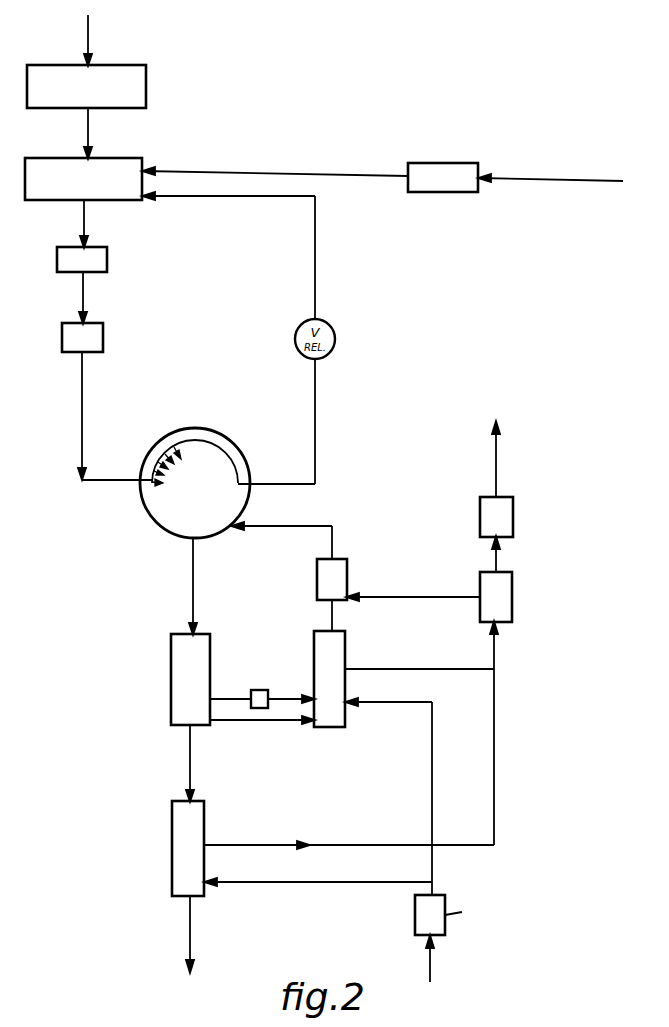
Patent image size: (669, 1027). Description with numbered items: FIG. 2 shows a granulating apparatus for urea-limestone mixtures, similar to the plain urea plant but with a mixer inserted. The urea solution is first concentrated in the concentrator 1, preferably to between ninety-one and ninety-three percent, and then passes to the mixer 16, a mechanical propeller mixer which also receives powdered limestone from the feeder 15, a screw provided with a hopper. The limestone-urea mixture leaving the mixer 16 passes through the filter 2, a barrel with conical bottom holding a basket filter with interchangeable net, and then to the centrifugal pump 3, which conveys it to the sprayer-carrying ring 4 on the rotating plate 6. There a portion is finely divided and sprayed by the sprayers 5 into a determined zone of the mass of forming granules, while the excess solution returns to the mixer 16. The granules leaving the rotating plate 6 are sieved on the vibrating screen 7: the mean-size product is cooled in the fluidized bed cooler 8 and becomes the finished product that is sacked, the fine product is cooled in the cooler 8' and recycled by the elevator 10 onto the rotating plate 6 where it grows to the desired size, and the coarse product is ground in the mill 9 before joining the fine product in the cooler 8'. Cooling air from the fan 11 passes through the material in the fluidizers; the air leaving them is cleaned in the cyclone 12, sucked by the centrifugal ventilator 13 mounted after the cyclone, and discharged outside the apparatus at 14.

The concentrator 1 is at (147, 74).
The mixer 16 is at (128, 160).
The filter 2 is at (108, 259).
The centrifugal pump 3 is at (104, 336).
The sprayer-carrying ring 4 is at (185, 440).
The sprayers 5 is at (169, 479).
The rotating plate 6 is at (229, 438).
The vibrating screen 7 is at (171, 667).
The fluidized bed cooler 8 is at (170, 848).
The fluidized bed cooler 8' is at (348, 679).
The mill 9 is at (260, 690).
The elevator 10 is at (347, 577).
The fan 11 is at (445, 935).
The cyclone 12 is at (480, 578).
The centrifugal ventilator 13 is at (480, 509).
The discharge outlet 14 is at (507, 450).
The feeder 15 is at (438, 164).